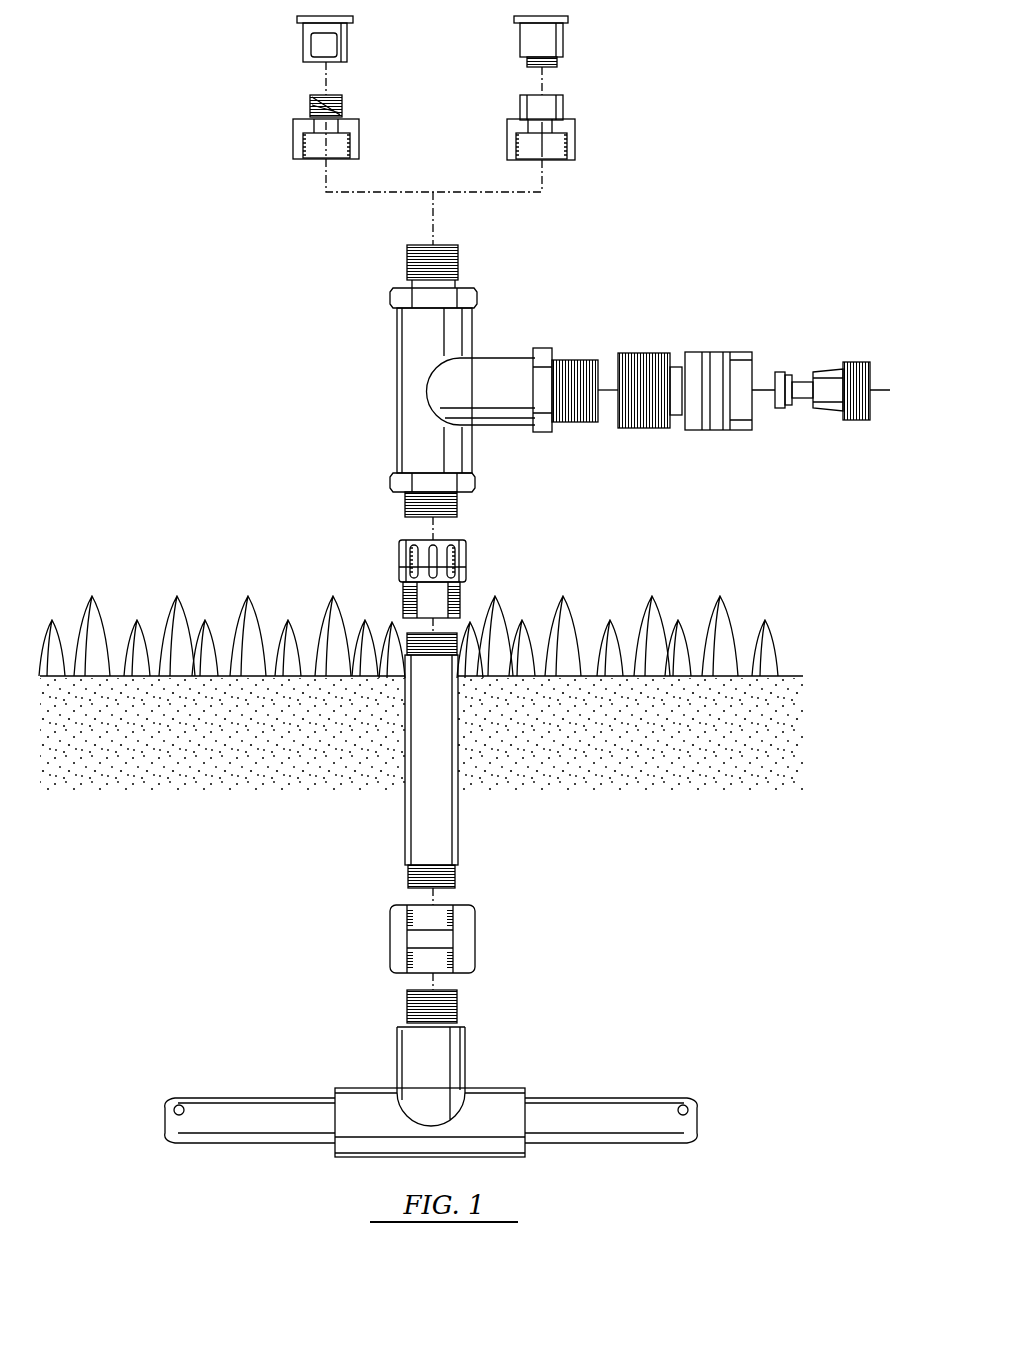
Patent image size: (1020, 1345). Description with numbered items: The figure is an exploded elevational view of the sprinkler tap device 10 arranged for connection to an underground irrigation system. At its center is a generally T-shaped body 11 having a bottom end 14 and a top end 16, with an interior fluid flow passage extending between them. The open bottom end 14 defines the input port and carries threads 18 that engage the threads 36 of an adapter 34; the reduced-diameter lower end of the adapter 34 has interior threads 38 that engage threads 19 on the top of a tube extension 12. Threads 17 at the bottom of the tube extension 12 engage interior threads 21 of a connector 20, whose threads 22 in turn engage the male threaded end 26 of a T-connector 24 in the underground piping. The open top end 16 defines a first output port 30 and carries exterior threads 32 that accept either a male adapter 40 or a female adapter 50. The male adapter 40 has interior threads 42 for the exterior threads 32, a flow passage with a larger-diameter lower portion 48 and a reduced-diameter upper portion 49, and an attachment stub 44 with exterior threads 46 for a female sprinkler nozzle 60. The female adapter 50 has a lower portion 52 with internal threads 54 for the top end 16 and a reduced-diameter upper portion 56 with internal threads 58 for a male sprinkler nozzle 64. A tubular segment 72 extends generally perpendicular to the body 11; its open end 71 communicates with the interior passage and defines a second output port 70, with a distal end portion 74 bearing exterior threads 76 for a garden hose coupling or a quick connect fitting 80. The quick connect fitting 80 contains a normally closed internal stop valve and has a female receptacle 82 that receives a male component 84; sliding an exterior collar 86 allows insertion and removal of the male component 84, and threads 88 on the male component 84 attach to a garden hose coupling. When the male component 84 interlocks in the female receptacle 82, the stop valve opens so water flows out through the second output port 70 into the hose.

The sprinkler tap device 10 is at (435, 367).
The T-shaped body 11 is at (395, 425).
The tube extension 12 is at (424, 733).
The bottom end 14 is at (428, 517).
The top end 16 is at (430, 254).
The threads 17 is at (408, 876).
The threads 18 is at (457, 505).
The threads 19 is at (410, 645).
The connector 20 is at (425, 957).
The interior threads 21 is at (415, 915).
The threads 22 is at (415, 965).
The T-connector 24 is at (431, 1073).
The male threaded end 26 is at (405, 1005).
The first output port 30 is at (426, 245).
The exterior threads 32 is at (407, 256).
The adapter 34 is at (418, 547).
The threads 36 is at (456, 545).
The interior threads 38 is at (440, 612).
The male adapter 40 is at (298, 176).
The interior threads 42 is at (313, 160).
The attachment stub 44 is at (317, 96).
The exterior threads 46 is at (312, 104).
The lower portion 48 is at (340, 154).
The upper portion 49 is at (326, 128).
The female adapter 50 is at (608, 165).
The lower portion 52 is at (575, 153).
The internal threads 54 is at (547, 162).
The upper portion 56 is at (555, 92).
The internal threads 58 is at (537, 97).
The female sprinkler nozzle 60 is at (300, 36).
The male sprinkler nozzle 64 is at (568, 34).
The second output port 70 is at (640, 387).
The open end 71 is at (605, 370).
The tubular segment 72 is at (500, 355).
The distal end portion 74 is at (587, 424).
The exterior threads 76 is at (587, 360).
The quick connect fitting 80 is at (733, 378).
The female receptacle 82 is at (823, 381).
The male component 84 is at (822, 370).
The exterior collar 86 is at (722, 432).
The threads 88 is at (855, 362).